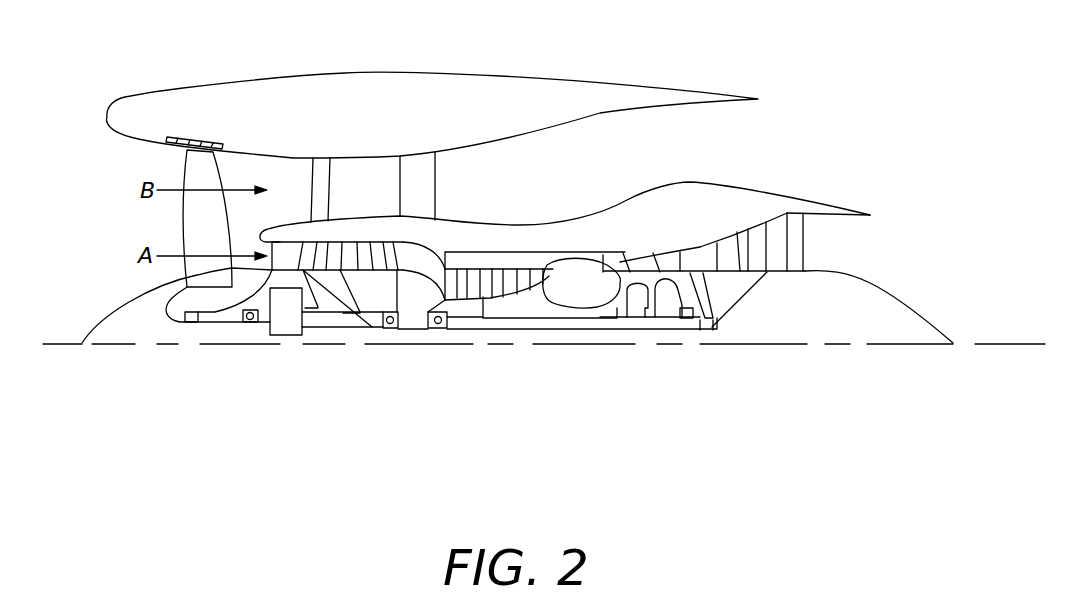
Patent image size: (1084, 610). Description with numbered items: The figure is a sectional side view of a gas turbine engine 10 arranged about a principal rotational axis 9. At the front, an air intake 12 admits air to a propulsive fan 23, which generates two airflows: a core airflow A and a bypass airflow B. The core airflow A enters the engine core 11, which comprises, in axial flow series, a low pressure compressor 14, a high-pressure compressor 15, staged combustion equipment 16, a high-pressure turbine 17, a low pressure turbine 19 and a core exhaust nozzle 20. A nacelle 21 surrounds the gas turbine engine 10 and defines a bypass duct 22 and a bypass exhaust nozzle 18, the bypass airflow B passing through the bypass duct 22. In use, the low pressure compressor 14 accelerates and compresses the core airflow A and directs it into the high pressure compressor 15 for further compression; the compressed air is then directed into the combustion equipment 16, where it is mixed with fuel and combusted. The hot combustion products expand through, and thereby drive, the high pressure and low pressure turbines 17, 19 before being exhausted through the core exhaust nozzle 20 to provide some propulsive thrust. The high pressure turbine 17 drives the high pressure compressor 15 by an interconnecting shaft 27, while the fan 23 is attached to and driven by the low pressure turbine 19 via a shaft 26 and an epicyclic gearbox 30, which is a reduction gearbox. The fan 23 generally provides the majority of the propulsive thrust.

The principal rotational axis 9 is at (658, 345).
The gas turbine engine 10 is at (183, 91).
The core 11 is at (549, 234).
The air intake 12 is at (125, 165).
The low pressure compressor 14 is at (355, 247).
The high-pressure compressor 15 is at (500, 280).
The staged combustion equipment 16 is at (577, 282).
The high-pressure turbine 17 is at (637, 262).
The bypass exhaust nozzle 18 is at (760, 140).
The low pressure turbine 19 is at (777, 233).
The core exhaust nozzle 20 is at (849, 245).
The nacelle 21 is at (412, 83).
The bypass duct 22 is at (703, 154).
The propulsive fan 23 is at (187, 222).
The shaft 26 is at (495, 330).
The interconnecting shaft 27 is at (537, 318).
The epicyclic gearbox 30 is at (285, 322).